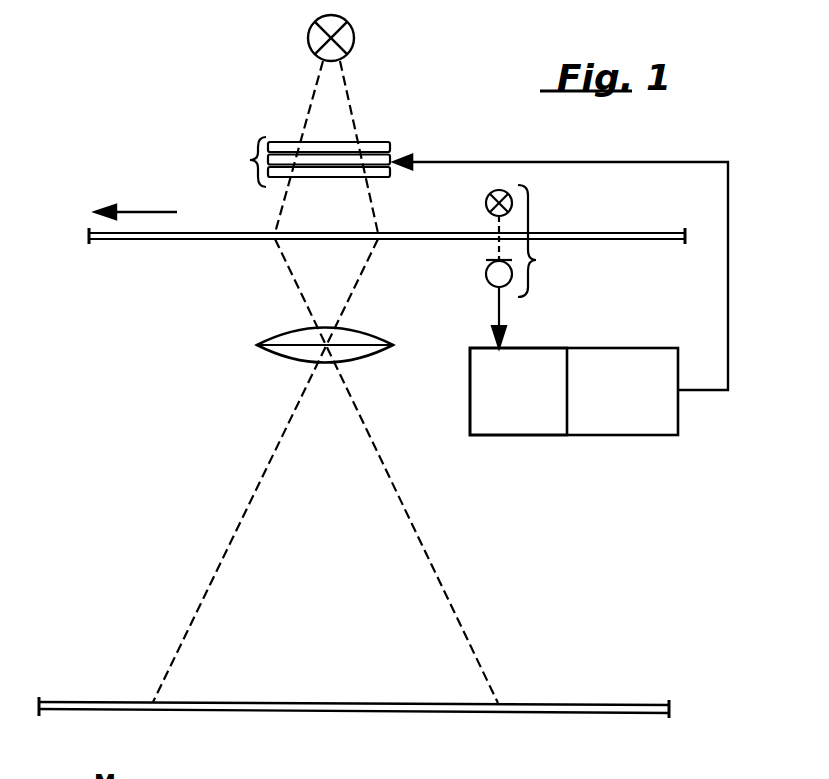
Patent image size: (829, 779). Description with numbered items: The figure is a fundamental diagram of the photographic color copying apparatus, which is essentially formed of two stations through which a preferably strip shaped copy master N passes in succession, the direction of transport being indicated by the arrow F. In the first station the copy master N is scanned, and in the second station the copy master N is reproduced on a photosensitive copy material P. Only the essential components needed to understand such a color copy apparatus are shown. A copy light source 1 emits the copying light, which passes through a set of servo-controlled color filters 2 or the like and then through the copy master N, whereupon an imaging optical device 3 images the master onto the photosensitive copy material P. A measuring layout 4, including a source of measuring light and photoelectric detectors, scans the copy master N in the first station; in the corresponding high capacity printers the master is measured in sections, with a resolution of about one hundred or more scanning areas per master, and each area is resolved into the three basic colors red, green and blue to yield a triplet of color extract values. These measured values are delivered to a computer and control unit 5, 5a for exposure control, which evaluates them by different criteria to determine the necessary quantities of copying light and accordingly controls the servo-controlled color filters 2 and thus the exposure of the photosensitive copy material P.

The copy light source 1 is at (346, 33).
The set of servo-controlled color filters 2 is at (248, 157).
The imaging optical device 3 is at (292, 335).
The measuring layout 4 is at (532, 262).
The computer and control unit 5 is at (607, 417).
The computer and control unit 5a is at (513, 417).
The copy master N is at (200, 238).
The arrow indicating direction of transport F is at (133, 210).
The photosensitive copy material P is at (365, 702).